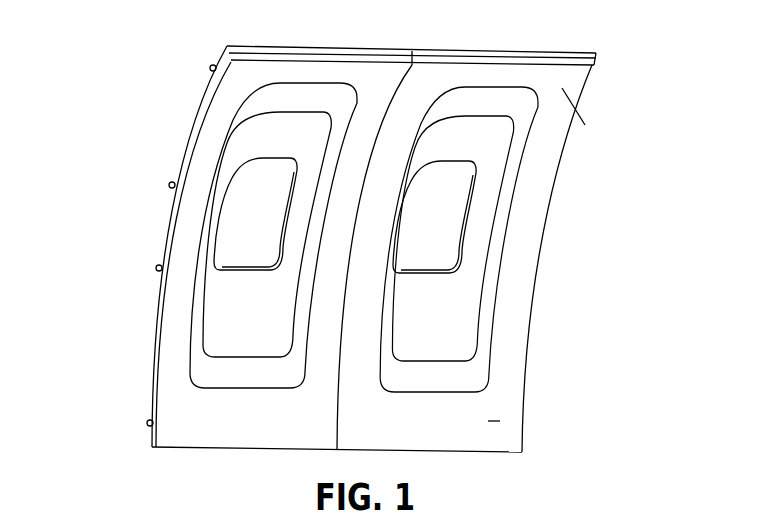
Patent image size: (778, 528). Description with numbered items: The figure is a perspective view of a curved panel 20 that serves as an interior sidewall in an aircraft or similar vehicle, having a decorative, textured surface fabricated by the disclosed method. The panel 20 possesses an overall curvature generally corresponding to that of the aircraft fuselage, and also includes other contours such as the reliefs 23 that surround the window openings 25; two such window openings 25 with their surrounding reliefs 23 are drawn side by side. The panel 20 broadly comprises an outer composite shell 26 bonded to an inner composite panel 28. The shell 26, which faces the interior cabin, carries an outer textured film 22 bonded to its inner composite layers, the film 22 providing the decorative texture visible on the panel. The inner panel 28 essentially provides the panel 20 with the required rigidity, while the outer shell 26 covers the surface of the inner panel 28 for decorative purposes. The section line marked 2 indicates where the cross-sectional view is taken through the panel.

The curved panel 20 is at (357, 230).
The outer textured film 22 is at (526, 222).
The reliefs 23 is at (453, 135).
The window openings 25 is at (233, 232).
The outer composite shell 26 is at (488, 421).
The inner composite panel 28 is at (196, 81).
The section line 2- 2 is at (596, 58).